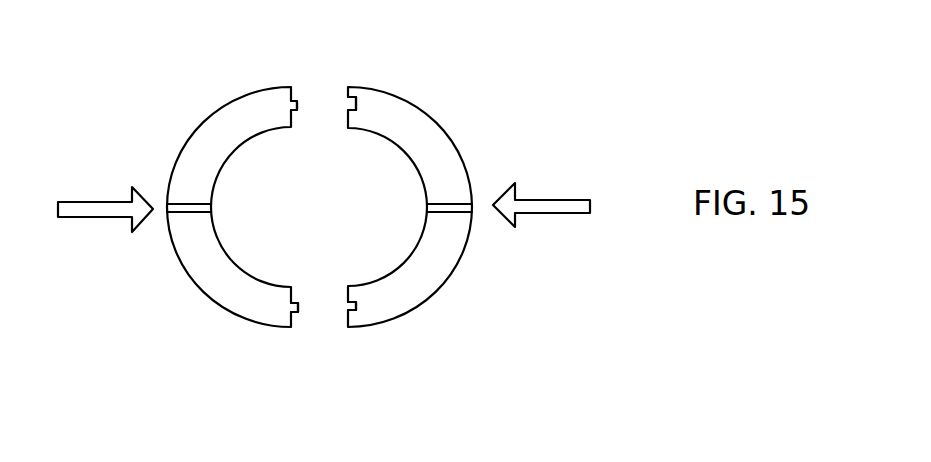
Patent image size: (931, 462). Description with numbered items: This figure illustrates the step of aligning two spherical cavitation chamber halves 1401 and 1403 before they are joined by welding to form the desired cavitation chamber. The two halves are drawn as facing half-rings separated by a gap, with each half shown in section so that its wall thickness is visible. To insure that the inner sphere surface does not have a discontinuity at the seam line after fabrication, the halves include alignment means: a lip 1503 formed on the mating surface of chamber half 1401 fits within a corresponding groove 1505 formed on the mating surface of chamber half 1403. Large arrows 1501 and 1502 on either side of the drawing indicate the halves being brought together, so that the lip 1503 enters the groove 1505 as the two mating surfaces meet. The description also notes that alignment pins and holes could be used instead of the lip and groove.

The spherical chamber half 1401 is at (156, 117).
The spherical chamber half 1403 is at (469, 124).
The direction of closing force on first half 1501 is at (105, 224).
The direction of closing force on second half 1502 is at (541, 220).
The lip 1503 is at (297, 105).
The groove 1505 is at (355, 98).